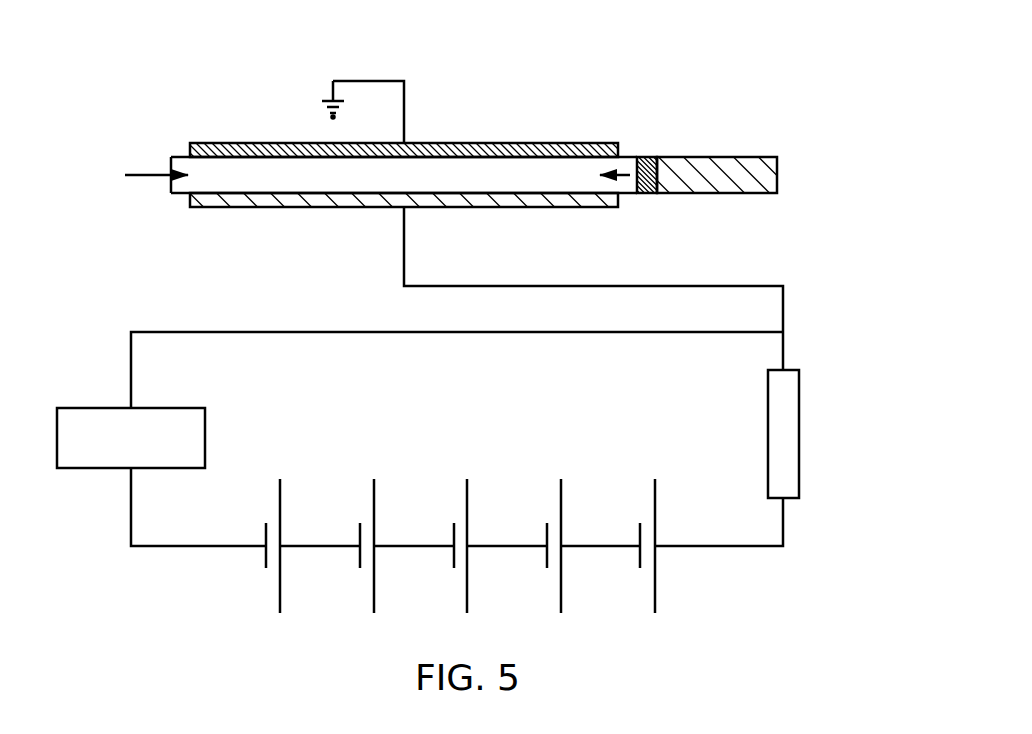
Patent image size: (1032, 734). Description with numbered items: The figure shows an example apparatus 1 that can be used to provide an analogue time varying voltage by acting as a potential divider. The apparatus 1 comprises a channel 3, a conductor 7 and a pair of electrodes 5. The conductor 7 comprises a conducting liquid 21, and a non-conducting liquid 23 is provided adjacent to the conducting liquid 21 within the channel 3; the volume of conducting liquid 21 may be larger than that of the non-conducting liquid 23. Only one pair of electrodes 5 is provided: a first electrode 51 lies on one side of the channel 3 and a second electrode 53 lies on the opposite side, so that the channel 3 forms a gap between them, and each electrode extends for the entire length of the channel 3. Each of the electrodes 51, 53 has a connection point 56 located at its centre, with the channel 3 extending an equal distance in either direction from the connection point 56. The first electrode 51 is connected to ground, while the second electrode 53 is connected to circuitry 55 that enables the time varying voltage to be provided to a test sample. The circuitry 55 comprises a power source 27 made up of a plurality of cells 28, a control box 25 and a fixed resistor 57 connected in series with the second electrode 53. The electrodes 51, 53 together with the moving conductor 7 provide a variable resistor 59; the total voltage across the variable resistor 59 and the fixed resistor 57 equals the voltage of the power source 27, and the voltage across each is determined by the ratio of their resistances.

The apparatus 1 is at (568, 84).
The channel 3 is at (145, 175).
The pair of electrodes 5 is at (197, 197).
The conductor 7 is at (648, 195).
The conducting liquid 21 is at (650, 140).
The non-conducting liquid 23 is at (749, 140).
The control box 25 is at (207, 438).
The power source 27 is at (670, 557).
The cells 28 is at (281, 563).
The first electrode 51 is at (489, 135).
The second electrode 53 is at (503, 215).
The circuitry 55 is at (816, 348).
The connection point 56 is at (405, 141).
The fixed resistor 57 is at (800, 433).
The variable resistor 59 is at (827, 175).